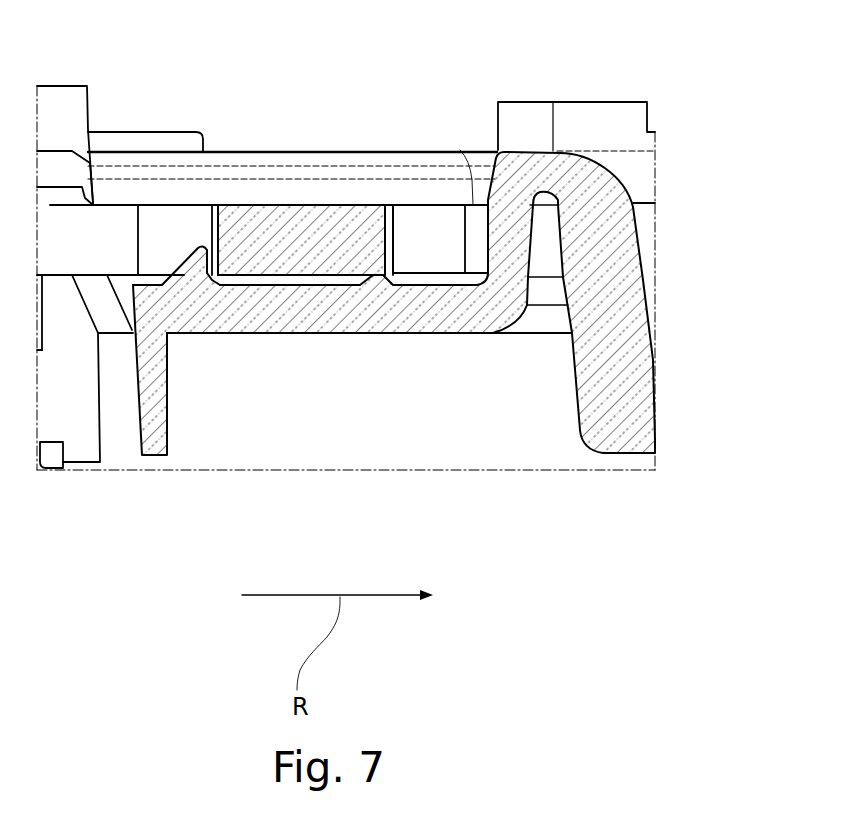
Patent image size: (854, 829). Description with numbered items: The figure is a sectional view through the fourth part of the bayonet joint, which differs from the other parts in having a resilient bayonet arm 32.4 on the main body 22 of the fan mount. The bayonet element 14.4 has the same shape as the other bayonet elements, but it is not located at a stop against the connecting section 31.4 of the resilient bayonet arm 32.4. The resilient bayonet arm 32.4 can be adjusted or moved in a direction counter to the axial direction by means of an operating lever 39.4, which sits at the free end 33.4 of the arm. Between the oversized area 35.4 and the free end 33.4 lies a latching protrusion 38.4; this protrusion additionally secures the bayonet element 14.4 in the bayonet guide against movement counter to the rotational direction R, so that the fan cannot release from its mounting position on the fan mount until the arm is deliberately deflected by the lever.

The bayonet element 14.4 is at (280, 227).
The main body 22 is at (430, 163).
The connecting section 31.4 is at (513, 233).
The resilient bayonet arm 32.4 is at (437, 305).
The free end 33.4 is at (155, 284).
The oversized area 35.4 is at (312, 307).
The latching protrusion 38.4 is at (191, 273).
The operating lever 39.4 is at (156, 392).